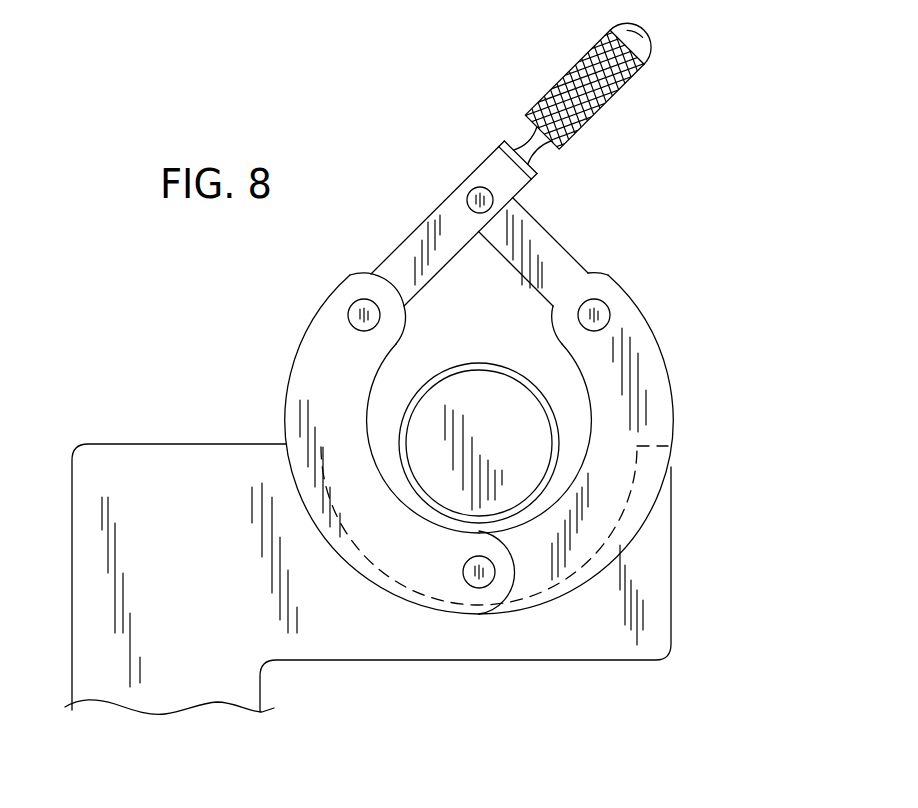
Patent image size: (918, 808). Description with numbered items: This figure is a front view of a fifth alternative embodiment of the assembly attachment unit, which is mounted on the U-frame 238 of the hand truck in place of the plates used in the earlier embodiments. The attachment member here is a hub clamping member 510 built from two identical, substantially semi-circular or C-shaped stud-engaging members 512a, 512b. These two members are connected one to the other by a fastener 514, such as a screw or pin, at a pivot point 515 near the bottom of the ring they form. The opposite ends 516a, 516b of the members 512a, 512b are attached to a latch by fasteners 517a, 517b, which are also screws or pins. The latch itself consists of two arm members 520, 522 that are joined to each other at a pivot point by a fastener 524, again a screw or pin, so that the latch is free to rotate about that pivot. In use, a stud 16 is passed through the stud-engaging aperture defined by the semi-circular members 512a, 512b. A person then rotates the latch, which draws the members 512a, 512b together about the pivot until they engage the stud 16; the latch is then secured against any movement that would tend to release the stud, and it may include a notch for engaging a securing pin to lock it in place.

The stud 16 is at (418, 428).
The U-frame 238 is at (658, 580).
The hub clamping member 510 is at (473, 325).
The stud-engaging member 512a is at (325, 410).
The stud-engaging member 512b is at (571, 448).
The fastener 514 is at (467, 588).
The pivot point 515 is at (507, 598).
The end 516a is at (342, 278).
The end 516b is at (597, 273).
The fastener 517a is at (349, 326).
The fastener 517b is at (610, 320).
The arm member 520 is at (437, 264).
The arm member 522 is at (546, 229).
The fastener 524 is at (478, 188).